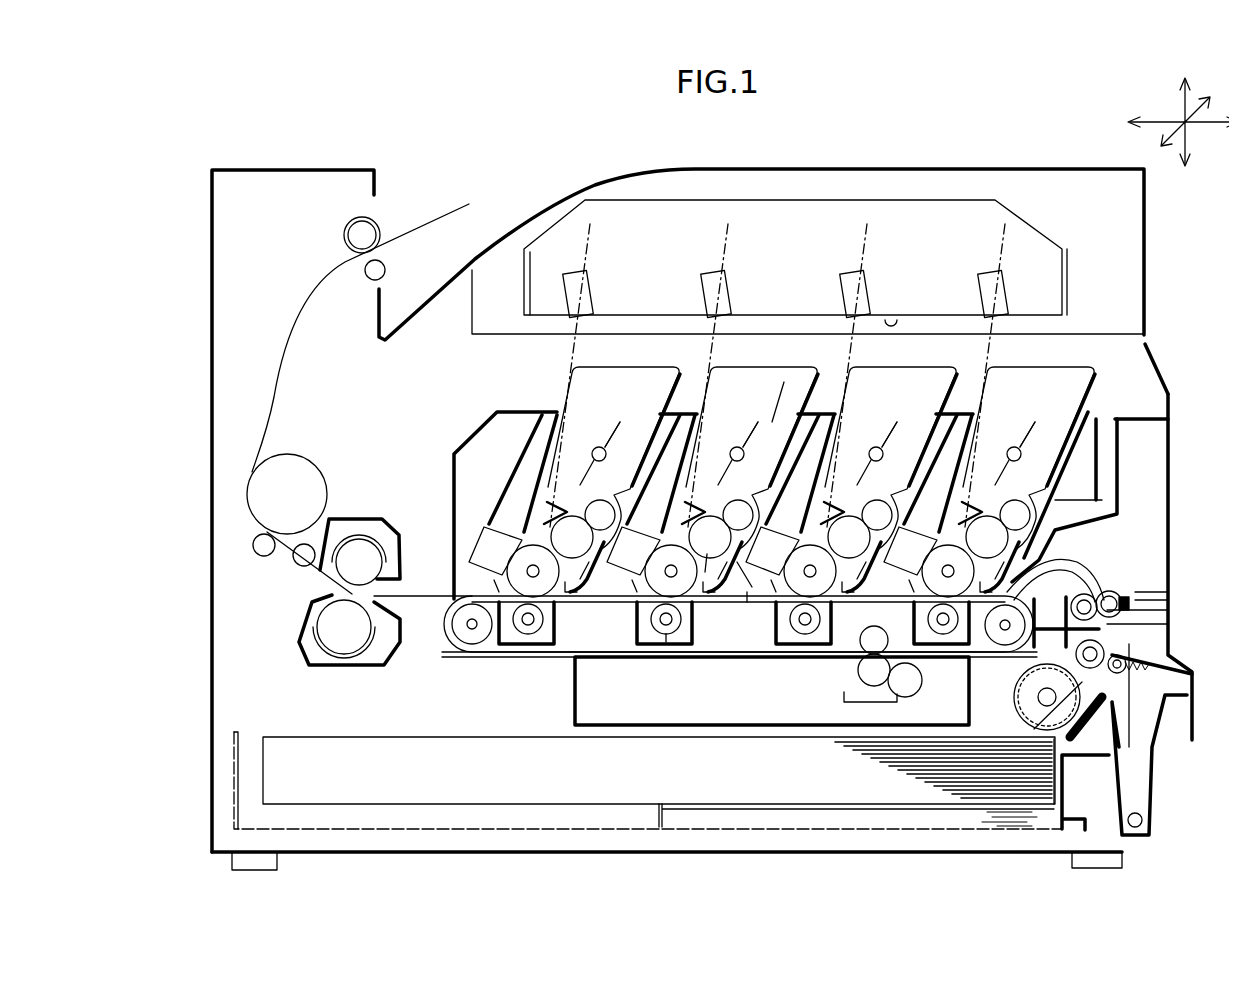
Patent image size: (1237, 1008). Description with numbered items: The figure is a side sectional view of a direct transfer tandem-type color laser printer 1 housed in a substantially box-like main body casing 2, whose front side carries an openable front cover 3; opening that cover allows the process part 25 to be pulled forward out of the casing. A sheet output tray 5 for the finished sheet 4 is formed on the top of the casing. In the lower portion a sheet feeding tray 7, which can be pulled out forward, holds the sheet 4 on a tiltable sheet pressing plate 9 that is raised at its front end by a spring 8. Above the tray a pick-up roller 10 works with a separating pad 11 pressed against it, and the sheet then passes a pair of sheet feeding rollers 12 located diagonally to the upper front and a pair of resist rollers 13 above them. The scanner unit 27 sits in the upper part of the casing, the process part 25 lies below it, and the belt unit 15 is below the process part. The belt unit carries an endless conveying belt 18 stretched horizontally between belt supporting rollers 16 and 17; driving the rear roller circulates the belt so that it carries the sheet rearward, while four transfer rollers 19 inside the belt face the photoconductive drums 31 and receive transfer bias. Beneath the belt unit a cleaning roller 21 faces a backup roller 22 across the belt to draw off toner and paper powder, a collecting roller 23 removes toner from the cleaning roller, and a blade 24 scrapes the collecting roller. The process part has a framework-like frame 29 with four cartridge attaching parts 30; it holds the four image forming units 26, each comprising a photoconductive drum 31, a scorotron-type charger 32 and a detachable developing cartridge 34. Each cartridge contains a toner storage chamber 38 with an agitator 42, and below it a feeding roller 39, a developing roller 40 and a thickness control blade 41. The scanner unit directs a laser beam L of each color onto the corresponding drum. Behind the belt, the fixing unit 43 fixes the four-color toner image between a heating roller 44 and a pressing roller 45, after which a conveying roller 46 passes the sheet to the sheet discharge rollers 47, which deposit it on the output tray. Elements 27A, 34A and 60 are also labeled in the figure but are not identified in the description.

The laser printer 1 is at (988, 148).
The main body casing 2 is at (308, 168).
The front cover 3 is at (1168, 513).
The sheet 4 is at (437, 215).
The sheet output tray 5 is at (505, 232).
The sheet feeding tray 7 is at (457, 852).
The spring 8 is at (1000, 830).
The sheet pressing plate 9 is at (760, 810).
The pick-up roller 10 is at (1067, 688).
The separating pad 11 is at (1080, 722).
The sheet feeding rollers 12 is at (1113, 657).
The resist rollers 13 is at (1092, 620).
The belt unit 15 is at (518, 674).
The belt supporting roller 16 is at (1003, 643).
The belt supporting roller 17 is at (470, 643).
The conveying belt 18 is at (540, 652).
The transfer rollers 19 is at (664, 634).
The cleaning roller 21 is at (866, 672).
The backup roller 22 is at (864, 645).
The collecting roller 23 is at (905, 678).
The blade 24 is at (890, 700).
The process part 25 is at (1122, 398).
The image forming units 26 is at (621, 342).
The scanner unit 27 is at (797, 217).
The LED head 27A is at (890, 312).
The frame 29 is at (1100, 458).
The cartridge attaching parts 30 is at (745, 598).
The photoconductive drum 31 is at (993, 438).
The scorotron-type charger 32 is at (612, 600).
The developing cartridge 34 is at (748, 575).
The toner hopper 34A is at (782, 380).
The toner storage chamber 38 is at (742, 444).
The feeding roller 39 is at (738, 506).
The developing roller 40 is at (708, 560).
The thickness control blade 41 is at (706, 514).
The agitator 42 is at (748, 452).
The fixing unit 43 is at (300, 655).
The heating roller 44 is at (340, 568).
The pressing roller 45 is at (325, 616).
The conveying roller 46 is at (257, 493).
The sheet discharge rollers 47 is at (377, 268).
The cover 60 is at (1158, 352).
The laser beam L is at (718, 262).